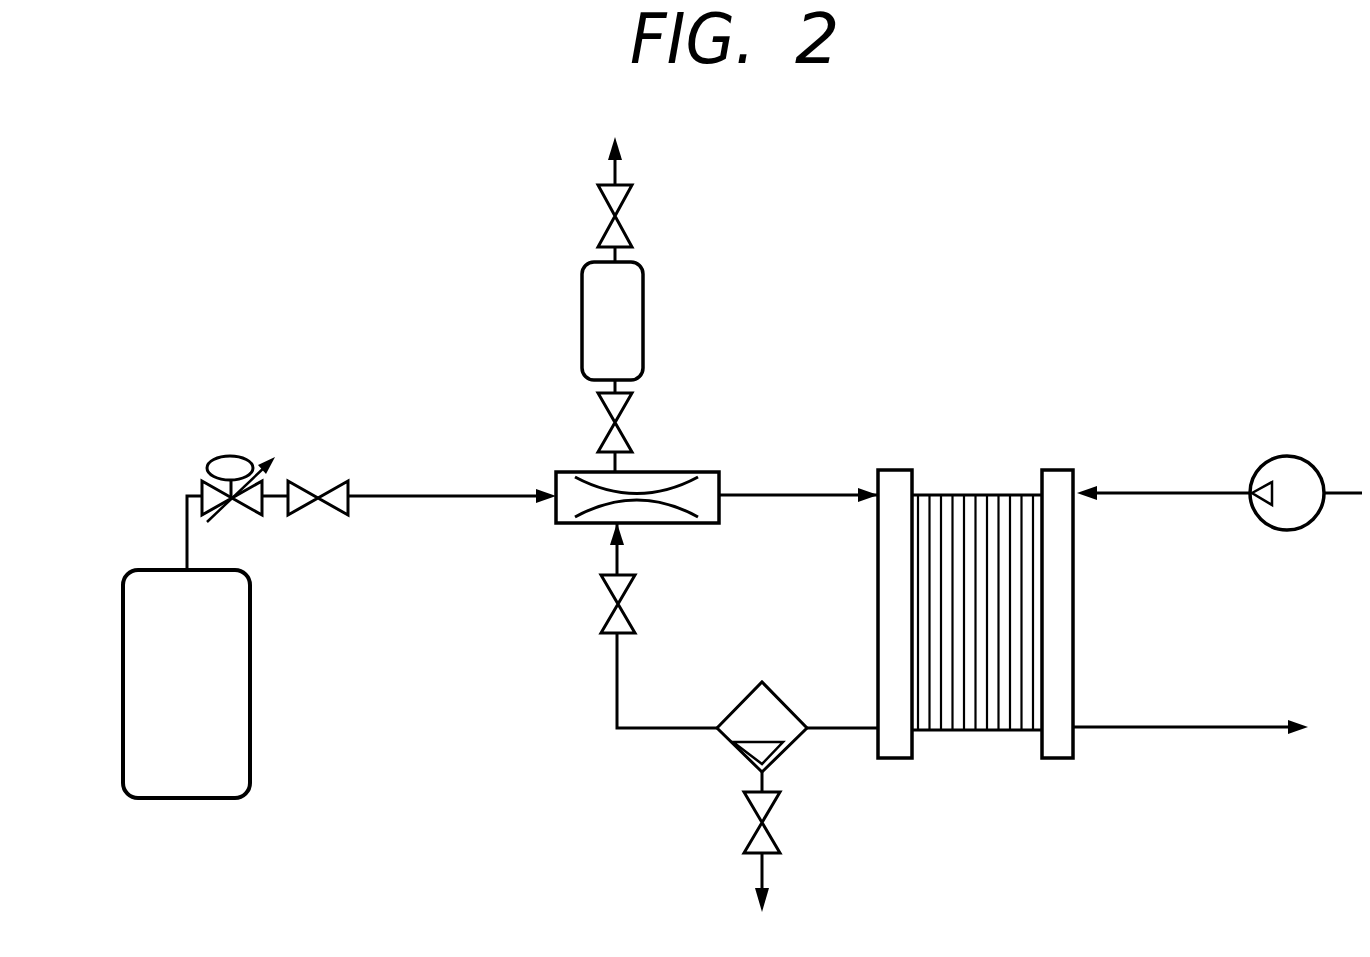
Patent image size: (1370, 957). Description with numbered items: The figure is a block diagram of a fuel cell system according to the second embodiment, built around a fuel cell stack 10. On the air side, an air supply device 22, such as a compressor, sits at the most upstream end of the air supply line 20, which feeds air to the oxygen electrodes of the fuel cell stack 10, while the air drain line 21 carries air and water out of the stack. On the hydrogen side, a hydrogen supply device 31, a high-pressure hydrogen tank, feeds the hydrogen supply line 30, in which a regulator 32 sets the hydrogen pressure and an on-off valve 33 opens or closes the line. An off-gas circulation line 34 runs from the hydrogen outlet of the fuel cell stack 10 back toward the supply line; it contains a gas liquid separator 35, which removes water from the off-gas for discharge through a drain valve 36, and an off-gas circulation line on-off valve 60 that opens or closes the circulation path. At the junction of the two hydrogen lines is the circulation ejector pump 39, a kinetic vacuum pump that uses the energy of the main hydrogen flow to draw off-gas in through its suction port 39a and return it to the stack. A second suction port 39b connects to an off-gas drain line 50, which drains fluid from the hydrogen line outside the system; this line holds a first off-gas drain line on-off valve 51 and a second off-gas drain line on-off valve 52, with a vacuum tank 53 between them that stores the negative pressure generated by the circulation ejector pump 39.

The fuel cell stack 10 is at (970, 717).
The air supply line 20 is at (1153, 493).
The air drain line 21 is at (1213, 727).
The air supply device 22 is at (1288, 530).
The hydrogen supply line 30 is at (187, 540).
The hydrogen supply device 31 is at (195, 798).
The regulator 32 is at (226, 455).
The on-off valve 33 is at (318, 496).
The off-gas circulation line 34 is at (617, 670).
The gas liquid separator 35 is at (770, 690).
The drain valve 36 is at (768, 822).
The circulation ejector pump 39 is at (708, 470).
The suction port 39a is at (612, 523).
The second suction port 39b is at (622, 471).
The off-gas drain line 50 is at (605, 170).
The first off-gas drain line on-off valve 51 is at (606, 430).
The second off-gas drain line on-off valve 52 is at (620, 208).
The vacuum tank 53 is at (582, 325).
The off-gas circulation line on-off valve 60 is at (617, 600).